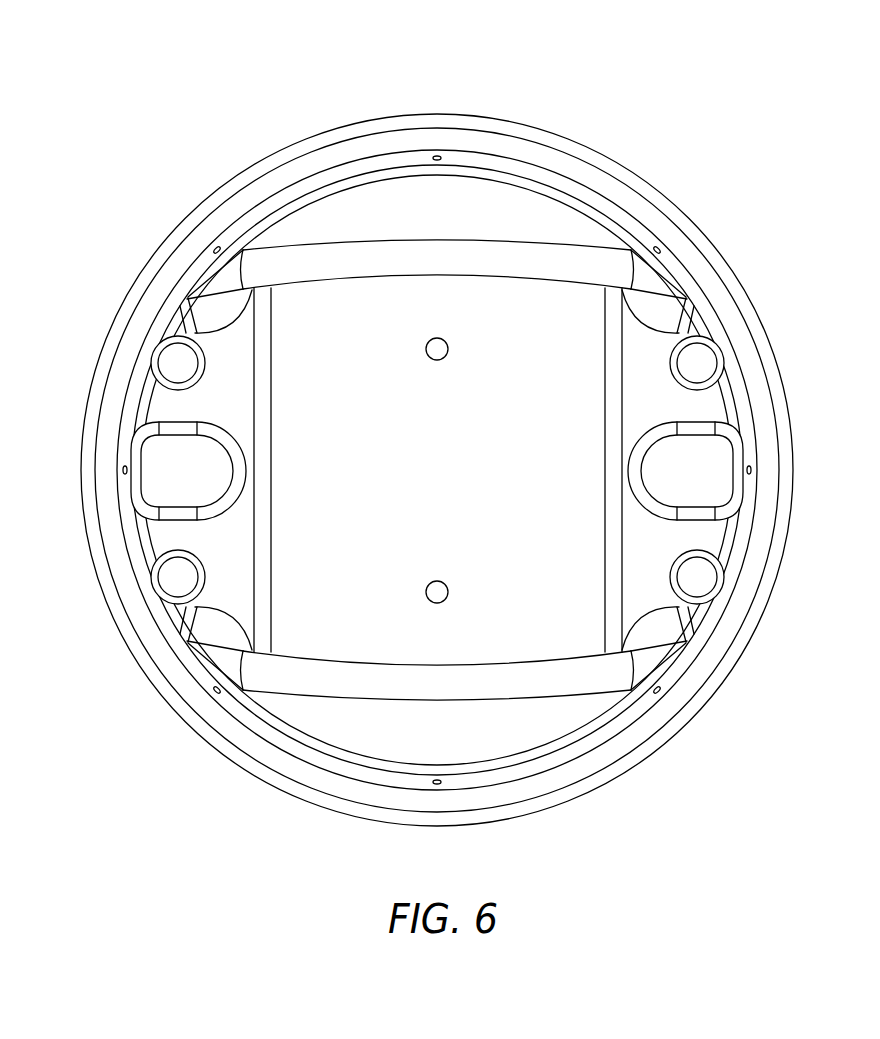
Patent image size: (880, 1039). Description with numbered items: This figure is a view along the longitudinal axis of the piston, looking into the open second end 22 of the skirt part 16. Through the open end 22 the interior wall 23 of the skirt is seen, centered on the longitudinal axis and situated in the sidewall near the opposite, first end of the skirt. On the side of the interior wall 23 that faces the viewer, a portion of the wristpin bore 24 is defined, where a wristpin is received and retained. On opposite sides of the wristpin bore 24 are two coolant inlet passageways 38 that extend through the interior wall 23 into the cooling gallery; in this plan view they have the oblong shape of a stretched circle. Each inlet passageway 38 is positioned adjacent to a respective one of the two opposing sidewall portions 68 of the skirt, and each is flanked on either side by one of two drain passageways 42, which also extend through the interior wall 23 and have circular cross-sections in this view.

The skirt part 16 is at (597, 87).
The second end 22 is at (553, 728).
The interior wall 23 is at (543, 220).
The wristpin bore 24 is at (333, 317).
The inlet passageway 38 is at (172, 472).
The drain passageway 42 is at (168, 362).
The sidewall portion 68 is at (82, 458).